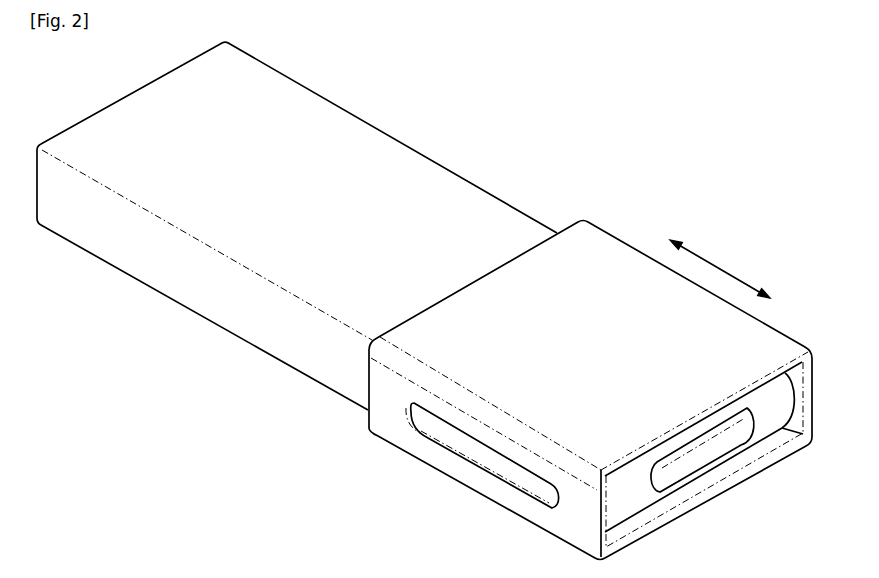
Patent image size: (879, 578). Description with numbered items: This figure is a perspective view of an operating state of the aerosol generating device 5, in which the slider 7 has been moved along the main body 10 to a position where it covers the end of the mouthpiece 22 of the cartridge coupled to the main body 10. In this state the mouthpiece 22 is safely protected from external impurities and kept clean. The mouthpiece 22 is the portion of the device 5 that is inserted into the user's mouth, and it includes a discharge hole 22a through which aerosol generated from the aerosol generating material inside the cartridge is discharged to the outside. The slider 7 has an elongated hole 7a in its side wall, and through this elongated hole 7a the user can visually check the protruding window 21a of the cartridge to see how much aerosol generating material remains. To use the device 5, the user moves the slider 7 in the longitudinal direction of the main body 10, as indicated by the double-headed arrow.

The aerosol generating device 5 is at (528, 77).
The main body 10 is at (291, 355).
The slider 7 is at (462, 473).
The elongated hole 7a is at (427, 437).
The protruding window 21a is at (517, 470).
The mouthpiece 22 is at (628, 499).
The discharge hole 22a is at (683, 450).